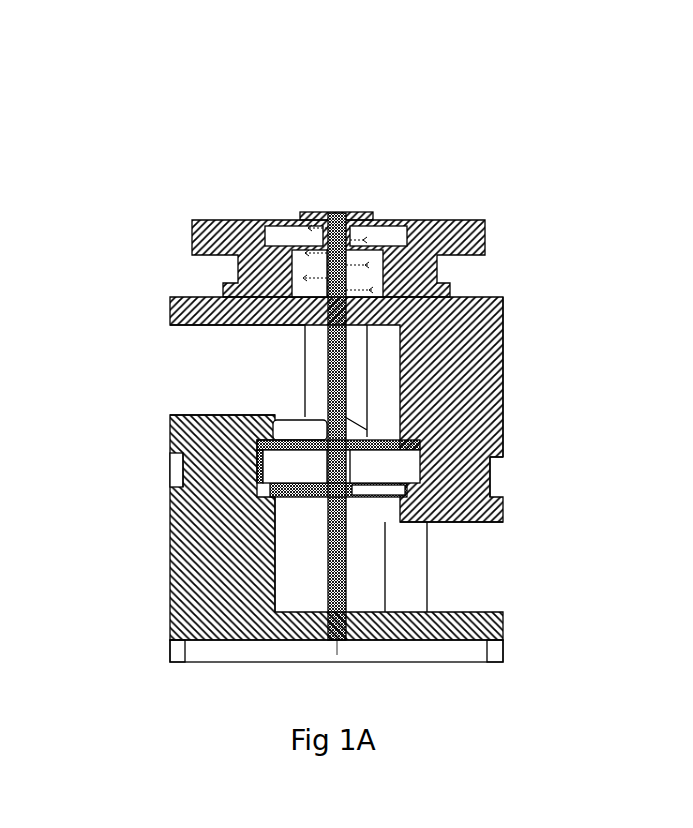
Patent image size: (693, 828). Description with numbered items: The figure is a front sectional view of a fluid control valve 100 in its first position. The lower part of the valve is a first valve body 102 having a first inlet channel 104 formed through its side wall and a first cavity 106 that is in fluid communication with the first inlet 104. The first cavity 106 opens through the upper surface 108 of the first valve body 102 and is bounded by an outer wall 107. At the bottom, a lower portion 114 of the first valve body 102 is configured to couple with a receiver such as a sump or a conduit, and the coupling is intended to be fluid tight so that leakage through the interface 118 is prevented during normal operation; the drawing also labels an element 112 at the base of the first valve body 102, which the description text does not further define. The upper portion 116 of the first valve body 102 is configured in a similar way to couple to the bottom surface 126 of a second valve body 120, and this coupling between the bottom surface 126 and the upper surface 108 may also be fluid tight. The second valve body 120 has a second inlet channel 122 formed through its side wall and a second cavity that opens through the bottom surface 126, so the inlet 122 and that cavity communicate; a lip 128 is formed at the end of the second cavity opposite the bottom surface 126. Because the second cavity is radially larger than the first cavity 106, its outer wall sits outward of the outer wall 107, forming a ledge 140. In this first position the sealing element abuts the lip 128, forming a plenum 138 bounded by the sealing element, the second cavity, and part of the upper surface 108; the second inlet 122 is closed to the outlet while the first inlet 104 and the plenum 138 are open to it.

The valve 100 is at (514, 176).
The first valve body 102 is at (158, 593).
The first inlet channel 104 is at (497, 569).
The first cavity 106 is at (308, 570).
The outer wall of the first cavity 107 is at (270, 585).
The upper surface 108 is at (465, 495).
The base plate 112 is at (210, 640).
The lower portion 114 is at (505, 647).
The upper portion 116 is at (512, 477).
The interface 118 is at (492, 495).
The second valve body 120 is at (505, 365).
The second inlet channel 122 is at (172, 389).
The bottom surface 126 is at (208, 497).
The lip 128 is at (410, 432).
The plenum 138 is at (396, 479).
The ledge 140 is at (267, 493).